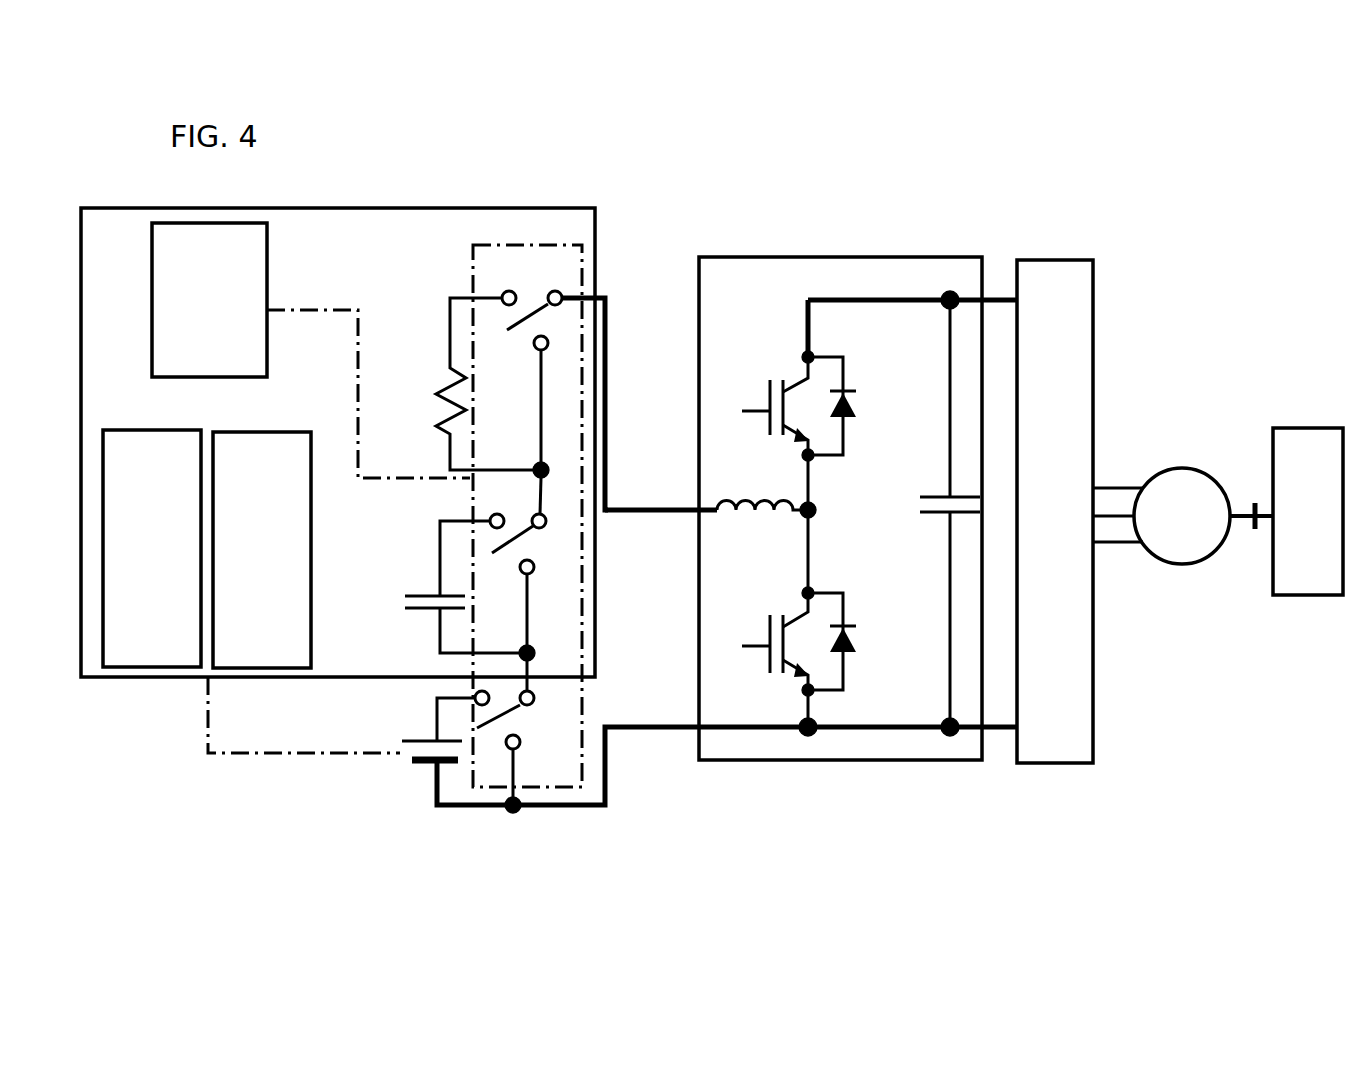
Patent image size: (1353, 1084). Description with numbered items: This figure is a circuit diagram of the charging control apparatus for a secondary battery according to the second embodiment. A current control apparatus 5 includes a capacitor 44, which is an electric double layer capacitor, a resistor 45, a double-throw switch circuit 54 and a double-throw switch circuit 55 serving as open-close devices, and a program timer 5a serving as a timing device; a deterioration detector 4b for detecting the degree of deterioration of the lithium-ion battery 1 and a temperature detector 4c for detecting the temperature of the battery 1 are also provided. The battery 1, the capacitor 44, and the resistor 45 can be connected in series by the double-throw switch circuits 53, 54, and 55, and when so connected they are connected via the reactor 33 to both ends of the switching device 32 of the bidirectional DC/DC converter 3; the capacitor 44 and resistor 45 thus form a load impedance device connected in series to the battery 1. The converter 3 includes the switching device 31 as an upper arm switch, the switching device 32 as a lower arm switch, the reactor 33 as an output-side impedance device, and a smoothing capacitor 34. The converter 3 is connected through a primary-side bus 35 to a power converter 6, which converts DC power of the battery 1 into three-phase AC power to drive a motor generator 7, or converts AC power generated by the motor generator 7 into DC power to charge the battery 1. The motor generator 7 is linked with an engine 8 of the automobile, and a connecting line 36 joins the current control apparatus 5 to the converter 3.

The battery 1 is at (417, 762).
The bidirectional DC/DC converter 3 is at (872, 257).
The deterioration detector 4b is at (311, 596).
The temperature detector 4c is at (113, 430).
The current control apparatus 5 is at (515, 208).
The program timer 5a is at (267, 282).
The power converter 6 is at (1095, 347).
The motor generator 7 is at (1187, 467).
The engine 8 is at (1302, 427).
The switching device 31 is at (790, 364).
The switching device 32 is at (768, 683).
The reactor 33 is at (755, 500).
The smoothing capacitor 34 is at (928, 517).
The primary-side bus 35 is at (1000, 298).
The input line 36 is at (634, 505).
The capacitor 44 is at (418, 592).
The resistor 45 is at (440, 375).
The double-throw switch circuit 53 is at (525, 745).
The double-throw switch circuit 54 is at (548, 570).
The double-throw switch circuit 55 is at (548, 279).